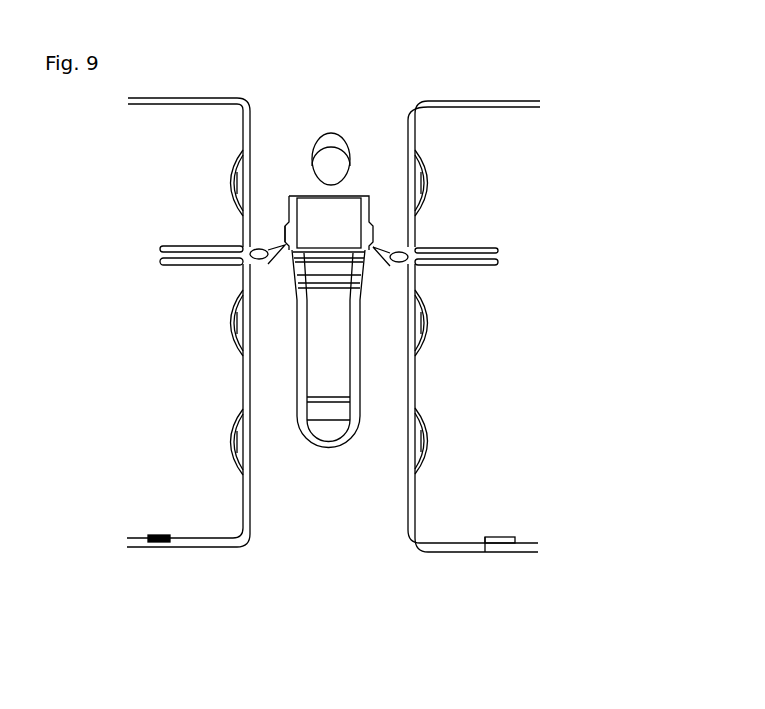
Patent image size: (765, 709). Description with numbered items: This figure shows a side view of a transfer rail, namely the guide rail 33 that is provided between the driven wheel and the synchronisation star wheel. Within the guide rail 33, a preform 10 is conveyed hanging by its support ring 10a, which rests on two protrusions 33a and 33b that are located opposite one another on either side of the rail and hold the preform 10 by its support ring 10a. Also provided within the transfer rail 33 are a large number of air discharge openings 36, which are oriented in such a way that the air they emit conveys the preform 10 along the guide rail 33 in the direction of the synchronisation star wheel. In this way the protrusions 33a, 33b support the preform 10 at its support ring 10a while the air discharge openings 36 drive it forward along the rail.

The preform 10 is at (322, 327).
The support ring 10a is at (285, 245).
The guide rail 33 is at (428, 242).
The protrusion 33a is at (386, 248).
The protrusion 33b is at (265, 248).
The air discharge openings 36 is at (237, 187).